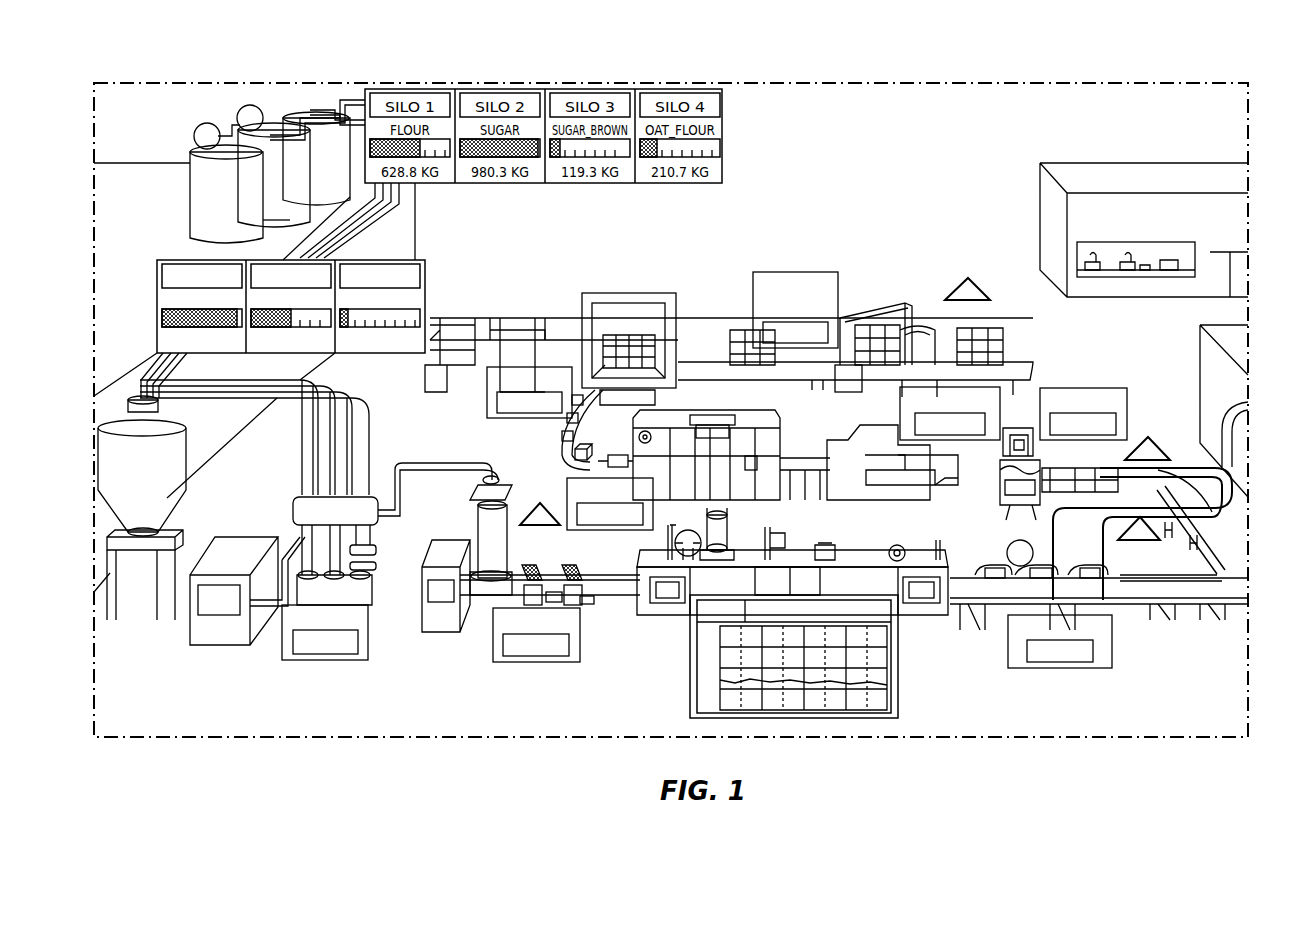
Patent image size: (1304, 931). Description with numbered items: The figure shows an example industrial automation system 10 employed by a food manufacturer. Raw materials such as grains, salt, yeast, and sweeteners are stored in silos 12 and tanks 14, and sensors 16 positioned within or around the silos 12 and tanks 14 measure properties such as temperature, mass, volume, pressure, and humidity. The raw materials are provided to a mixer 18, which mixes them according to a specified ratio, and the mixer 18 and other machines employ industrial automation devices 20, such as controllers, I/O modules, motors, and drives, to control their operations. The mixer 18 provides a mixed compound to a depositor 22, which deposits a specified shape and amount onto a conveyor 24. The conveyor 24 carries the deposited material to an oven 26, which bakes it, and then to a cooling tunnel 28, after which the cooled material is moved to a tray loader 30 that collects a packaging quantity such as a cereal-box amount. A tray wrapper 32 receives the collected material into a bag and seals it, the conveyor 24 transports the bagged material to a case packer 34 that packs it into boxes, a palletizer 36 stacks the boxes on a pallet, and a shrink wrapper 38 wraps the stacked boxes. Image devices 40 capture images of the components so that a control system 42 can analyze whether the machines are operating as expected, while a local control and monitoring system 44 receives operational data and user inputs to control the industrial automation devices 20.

The industrial automation system 10 is at (1178, 47).
The silos 12 is at (290, 105).
The tanks 14 is at (148, 316).
The sensors 16 is at (205, 123).
The mixer 18 is at (372, 617).
The industrial automation devices 20 is at (212, 640).
The depositor 22 is at (588, 609).
The conveyor 24 is at (600, 582).
The oven 26 is at (872, 546).
The cooling tunnel 28 is at (1105, 592).
The tray loader 30 is at (1128, 415).
The tray wrapper 32 is at (898, 398).
The case packer 34 is at (566, 500).
The palletizer 36 is at (472, 403).
The shrink wrapper 38 is at (845, 294).
The image devices 40 is at (525, 500).
The control system 42 is at (1150, 253).
The control and monitoring system 44 is at (212, 612).